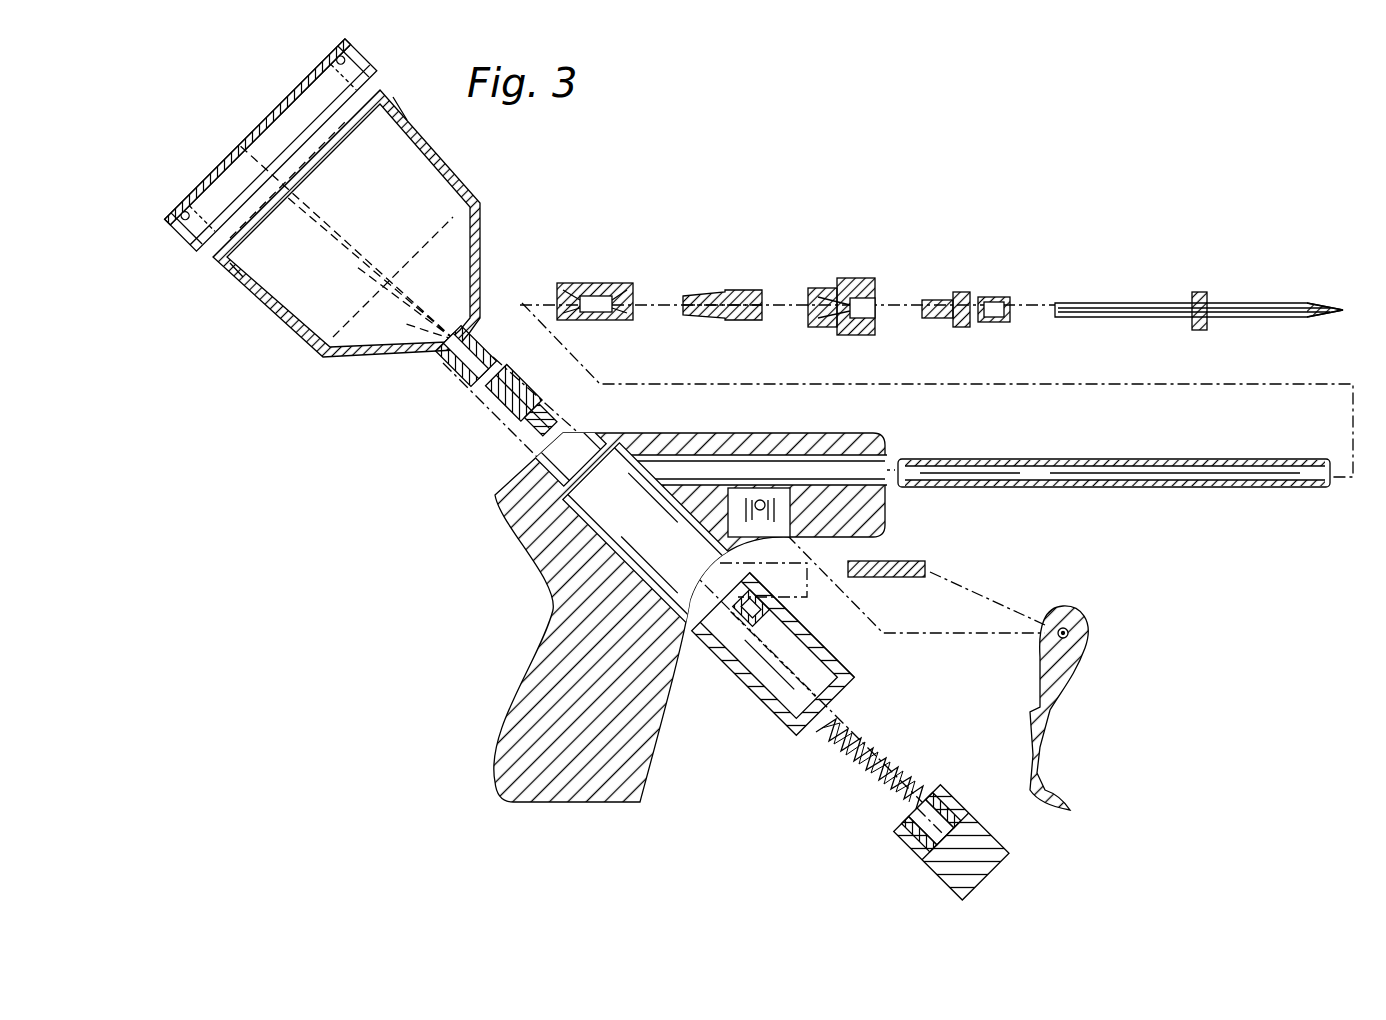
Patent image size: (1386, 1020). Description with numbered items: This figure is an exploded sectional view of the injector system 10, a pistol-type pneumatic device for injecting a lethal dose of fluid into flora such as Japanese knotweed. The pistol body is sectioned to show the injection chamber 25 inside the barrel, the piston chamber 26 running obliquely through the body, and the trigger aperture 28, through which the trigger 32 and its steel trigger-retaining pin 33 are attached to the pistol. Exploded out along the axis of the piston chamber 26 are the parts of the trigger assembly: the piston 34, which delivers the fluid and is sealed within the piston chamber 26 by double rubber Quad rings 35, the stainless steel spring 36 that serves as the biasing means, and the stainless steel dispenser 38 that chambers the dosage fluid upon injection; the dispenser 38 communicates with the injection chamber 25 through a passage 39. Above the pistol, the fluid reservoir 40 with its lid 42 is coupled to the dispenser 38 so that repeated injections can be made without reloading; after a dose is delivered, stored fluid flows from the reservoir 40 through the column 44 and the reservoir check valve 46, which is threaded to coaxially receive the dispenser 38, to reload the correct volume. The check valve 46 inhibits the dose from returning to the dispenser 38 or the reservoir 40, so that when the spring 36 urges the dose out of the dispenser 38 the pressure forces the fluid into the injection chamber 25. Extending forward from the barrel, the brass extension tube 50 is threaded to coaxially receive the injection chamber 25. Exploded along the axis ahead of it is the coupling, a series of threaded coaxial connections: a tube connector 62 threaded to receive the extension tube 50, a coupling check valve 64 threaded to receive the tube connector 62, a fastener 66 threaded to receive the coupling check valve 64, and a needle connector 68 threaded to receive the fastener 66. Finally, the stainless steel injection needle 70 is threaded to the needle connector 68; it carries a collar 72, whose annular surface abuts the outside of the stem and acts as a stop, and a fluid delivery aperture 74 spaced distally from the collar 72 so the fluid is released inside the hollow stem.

The injector system 10 is at (1050, 137).
The injection chamber 25 is at (765, 468).
The piston chamber 26 is at (648, 497).
The trigger aperture 28 is at (762, 511).
The trigger 32 is at (1068, 660).
The trigger-retaining pin 33 is at (905, 578).
The piston 34 is at (940, 835).
The double rubber Quad rings 35 is at (948, 800).
The spring 36 is at (866, 776).
The dispenser 38 is at (818, 678).
The passage 39 is at (775, 620).
The fluid reservoir 40 is at (412, 190).
The lid 42 is at (236, 158).
The column 44 is at (458, 380).
The reservoir check valve 46 is at (508, 404).
The extension tube 50 is at (1125, 478).
The tube connector 62 is at (597, 283).
The coupling check valve 64 is at (722, 291).
The fastener 66 is at (858, 280).
The needle connector 68 is at (962, 292).
The injection needle 70 is at (1090, 303).
The collar 72 is at (1200, 292).
The fluid delivery aperture 74 is at (1238, 313).